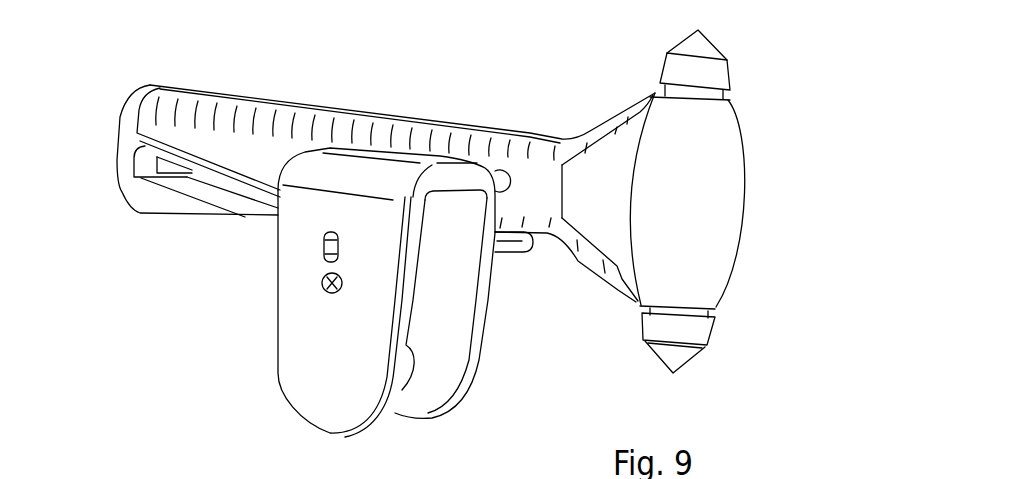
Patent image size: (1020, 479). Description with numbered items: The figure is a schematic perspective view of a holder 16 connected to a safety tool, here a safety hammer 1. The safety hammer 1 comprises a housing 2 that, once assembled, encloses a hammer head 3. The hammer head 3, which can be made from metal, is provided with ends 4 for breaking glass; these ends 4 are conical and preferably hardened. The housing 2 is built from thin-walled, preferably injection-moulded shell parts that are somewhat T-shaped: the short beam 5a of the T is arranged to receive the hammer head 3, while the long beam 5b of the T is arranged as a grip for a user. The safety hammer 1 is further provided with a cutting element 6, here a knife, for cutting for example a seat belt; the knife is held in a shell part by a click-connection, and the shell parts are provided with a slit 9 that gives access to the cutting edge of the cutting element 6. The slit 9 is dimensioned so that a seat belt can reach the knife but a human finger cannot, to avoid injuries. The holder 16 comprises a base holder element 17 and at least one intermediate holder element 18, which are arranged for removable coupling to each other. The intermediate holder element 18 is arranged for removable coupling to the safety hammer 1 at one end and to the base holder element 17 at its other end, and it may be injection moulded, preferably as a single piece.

The safety hammer 1 is at (115, 100).
The housing 2 is at (312, 100).
The hammer head 3 is at (705, 76).
The end for breaking glass 4 is at (697, 46).
The short beam 5a is at (720, 187).
The long beam 5b is at (468, 135).
The cutting element 6 is at (173, 177).
The slit 9 is at (222, 185).
The holder 16 is at (349, 293).
The base holder element 17 is at (292, 323).
The intermediate holder element 18 is at (515, 255).